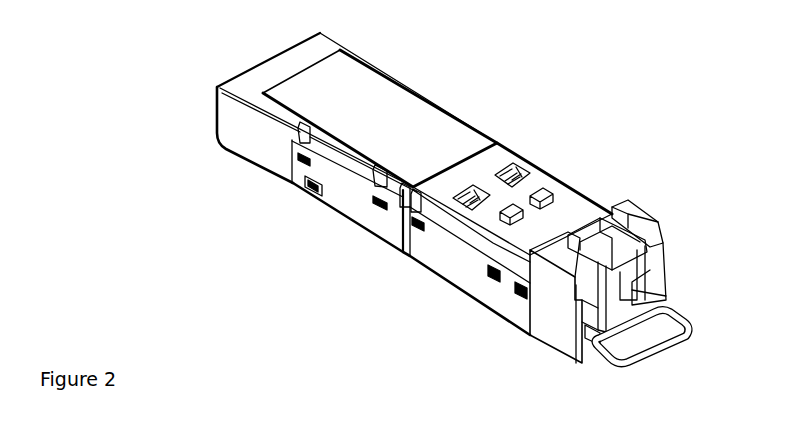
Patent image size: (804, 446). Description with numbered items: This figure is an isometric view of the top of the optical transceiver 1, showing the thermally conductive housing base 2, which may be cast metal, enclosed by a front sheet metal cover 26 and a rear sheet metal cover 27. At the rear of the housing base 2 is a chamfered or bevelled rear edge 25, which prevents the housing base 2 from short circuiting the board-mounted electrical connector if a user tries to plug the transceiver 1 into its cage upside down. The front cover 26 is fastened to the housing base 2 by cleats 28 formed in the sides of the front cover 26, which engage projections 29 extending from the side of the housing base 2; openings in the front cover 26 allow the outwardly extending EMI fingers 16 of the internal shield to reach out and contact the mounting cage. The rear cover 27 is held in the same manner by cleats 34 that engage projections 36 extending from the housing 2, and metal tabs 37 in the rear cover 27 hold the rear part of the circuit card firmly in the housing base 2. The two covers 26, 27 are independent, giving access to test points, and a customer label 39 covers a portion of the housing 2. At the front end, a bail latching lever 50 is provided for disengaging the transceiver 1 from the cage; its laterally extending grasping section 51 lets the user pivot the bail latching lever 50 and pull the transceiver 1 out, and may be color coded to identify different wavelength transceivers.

The optical transceiver 1 is at (165, 128).
The housing base 2 is at (560, 207).
The EMI fingers 16 is at (513, 203).
The chamfered rear edge 25 is at (247, 64).
The front sheet metal cover 26 is at (497, 300).
The rear sheet metal cover 27 is at (387, 217).
The cleats 28 is at (415, 212).
The projections 29 is at (469, 258).
The cleats 34 is at (297, 163).
The projections 36 is at (373, 203).
The metal tabs 37 is at (300, 193).
The customer label 39 is at (391, 124).
The bail latching lever 50 is at (620, 366).
The grasping section 51 is at (653, 345).